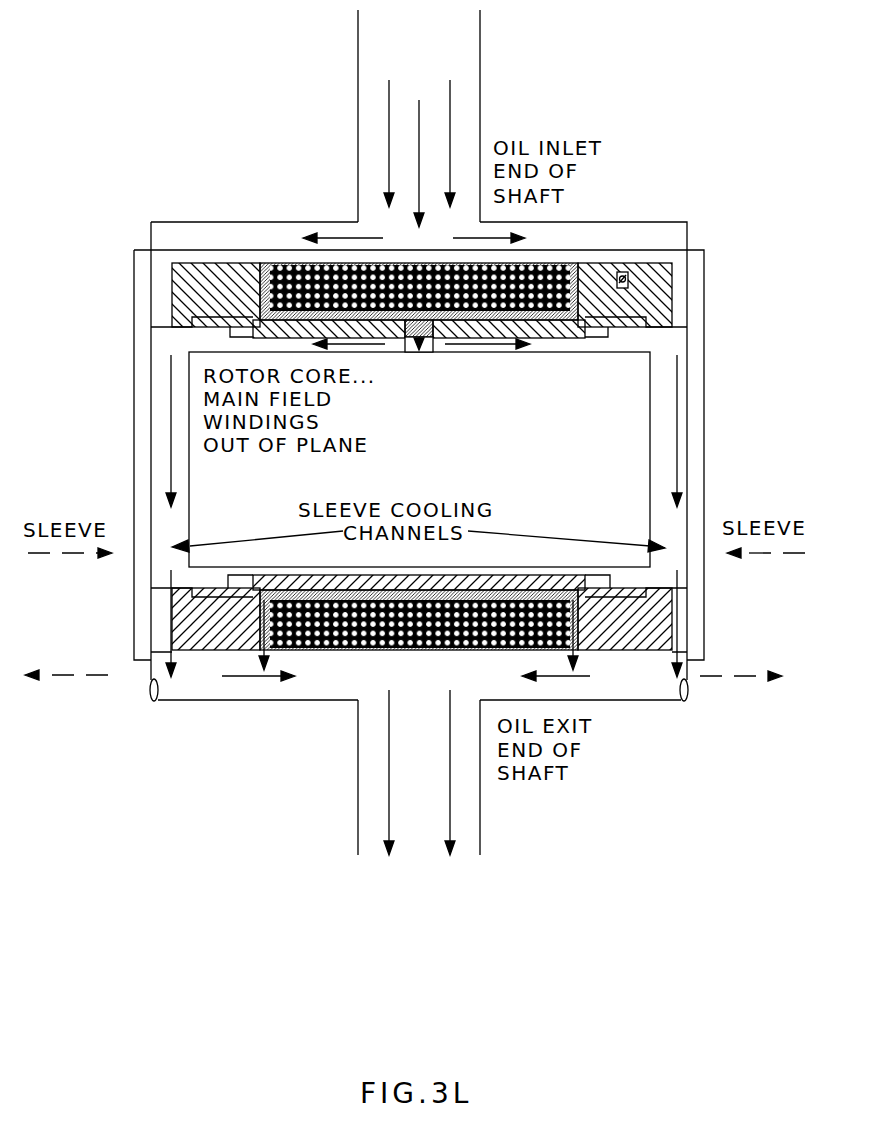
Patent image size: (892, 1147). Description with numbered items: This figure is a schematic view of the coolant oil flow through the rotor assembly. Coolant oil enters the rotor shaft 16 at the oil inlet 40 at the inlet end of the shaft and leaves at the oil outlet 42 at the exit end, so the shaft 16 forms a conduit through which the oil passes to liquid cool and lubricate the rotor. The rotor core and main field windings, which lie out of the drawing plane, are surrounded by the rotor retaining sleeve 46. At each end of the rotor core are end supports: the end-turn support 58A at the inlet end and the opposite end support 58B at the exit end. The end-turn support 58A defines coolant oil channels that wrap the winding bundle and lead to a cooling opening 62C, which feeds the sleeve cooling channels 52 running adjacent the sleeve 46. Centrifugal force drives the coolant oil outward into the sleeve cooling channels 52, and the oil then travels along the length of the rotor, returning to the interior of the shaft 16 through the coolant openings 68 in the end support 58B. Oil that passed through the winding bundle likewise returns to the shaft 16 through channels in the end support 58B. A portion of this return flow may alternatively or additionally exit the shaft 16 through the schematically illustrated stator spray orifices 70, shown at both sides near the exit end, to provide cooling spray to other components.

The rotor shaft 16 is at (481, 53).
The oil inlet 40 is at (436, 51).
The oil outlet 42 is at (437, 872).
The rotor retaining sleeve 46 is at (705, 390).
The sleeve cooling channels 52 is at (160, 469).
The end-turn support 58A is at (645, 300).
The end support 58B is at (636, 637).
The cooling opening 62C is at (428, 346).
The coolant openings 68 is at (200, 653).
The stator spray orifices 70 is at (65, 676).